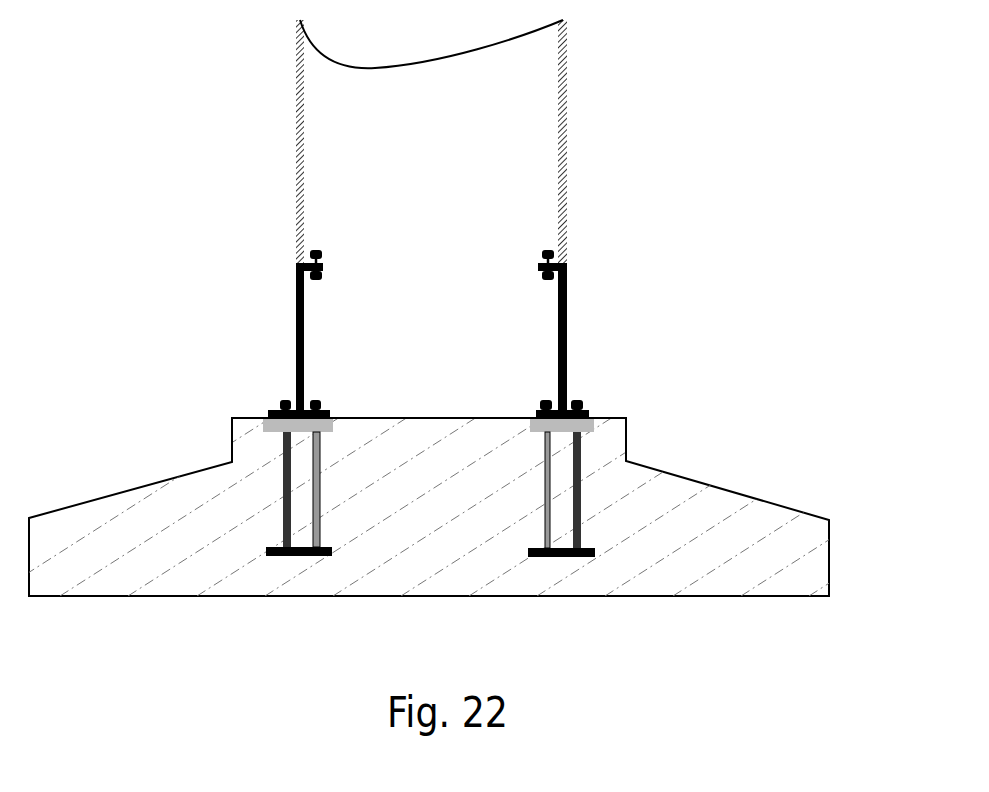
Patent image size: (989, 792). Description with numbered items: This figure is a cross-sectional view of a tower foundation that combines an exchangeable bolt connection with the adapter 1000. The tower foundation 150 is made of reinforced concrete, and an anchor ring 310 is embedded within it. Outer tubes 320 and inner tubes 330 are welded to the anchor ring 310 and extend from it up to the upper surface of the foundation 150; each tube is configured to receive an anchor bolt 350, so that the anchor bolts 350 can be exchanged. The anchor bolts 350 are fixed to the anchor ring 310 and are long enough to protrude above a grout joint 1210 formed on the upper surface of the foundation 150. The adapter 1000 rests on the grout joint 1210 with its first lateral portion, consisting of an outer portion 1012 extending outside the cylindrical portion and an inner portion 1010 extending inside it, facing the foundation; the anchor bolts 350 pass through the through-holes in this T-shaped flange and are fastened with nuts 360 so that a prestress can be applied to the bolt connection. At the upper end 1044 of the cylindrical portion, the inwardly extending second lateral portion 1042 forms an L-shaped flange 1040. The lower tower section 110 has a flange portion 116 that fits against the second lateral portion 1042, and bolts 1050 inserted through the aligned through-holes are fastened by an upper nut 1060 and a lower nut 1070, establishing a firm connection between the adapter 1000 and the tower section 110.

The lower tower section 110 is at (567, 131).
The flange portion 116 is at (577, 257).
The adapter 1000 is at (619, 318).
The inner portion of first lateral portion 1010 is at (587, 441).
The outer portion of first lateral portion 1012 is at (270, 412).
The L-shaped flange 1040 is at (310, 295).
The second lateral portion 1042 is at (323, 270).
The upper end of cylindrical portion 1044 is at (296, 285).
The bolts 1050 is at (323, 263).
The upper nut 1060 is at (317, 253).
The lower nut 1070 is at (317, 276).
The grout joint 1210 is at (525, 418).
The tower foundation 150 is at (717, 513).
The anchor ring 310 is at (593, 547).
The outer tubes 320 is at (268, 548).
The inner tubes 330 is at (320, 540).
The anchor bolts 350 is at (232, 462).
The nuts 360 is at (540, 403).